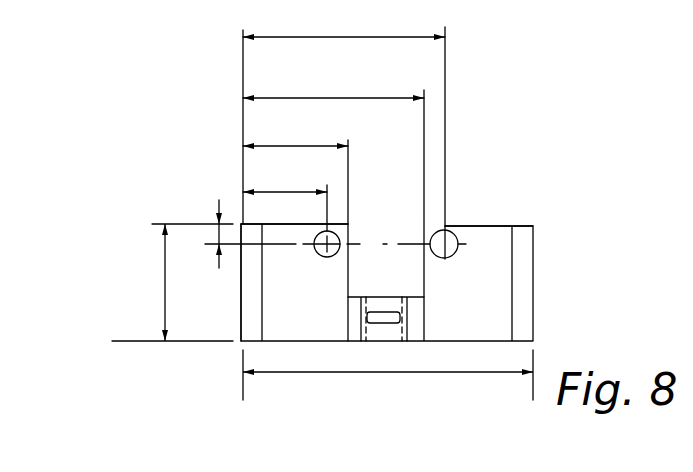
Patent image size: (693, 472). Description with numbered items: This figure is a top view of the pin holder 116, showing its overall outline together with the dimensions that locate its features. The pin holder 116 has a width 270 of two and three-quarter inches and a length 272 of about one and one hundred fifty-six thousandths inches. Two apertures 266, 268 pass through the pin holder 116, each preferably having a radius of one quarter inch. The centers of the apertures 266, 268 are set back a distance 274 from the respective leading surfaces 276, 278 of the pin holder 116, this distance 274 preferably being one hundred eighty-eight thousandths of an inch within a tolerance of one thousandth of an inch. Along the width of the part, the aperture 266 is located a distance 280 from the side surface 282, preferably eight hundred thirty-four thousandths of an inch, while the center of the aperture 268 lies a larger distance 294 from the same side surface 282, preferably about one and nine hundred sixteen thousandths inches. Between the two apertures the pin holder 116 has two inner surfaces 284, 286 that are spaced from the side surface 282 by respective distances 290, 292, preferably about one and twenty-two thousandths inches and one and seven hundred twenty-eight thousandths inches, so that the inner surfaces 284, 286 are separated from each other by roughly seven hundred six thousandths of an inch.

The pin holder 116 is at (555, 270).
The aperture 266 is at (318, 252).
The aperture 268 is at (458, 262).
The width 270 is at (380, 372).
The length 272 is at (165, 283).
The distance 274 is at (219, 228).
The leading surface 276 is at (282, 220).
The leading surface 278 is at (485, 222).
The distance 280 is at (266, 190).
The side surface 282 is at (231, 299).
The inner surface 284 is at (352, 246).
The inner surface 286 is at (414, 271).
The distance 290 is at (282, 145).
The distance 292 is at (332, 81).
The distance 294 is at (331, 36).